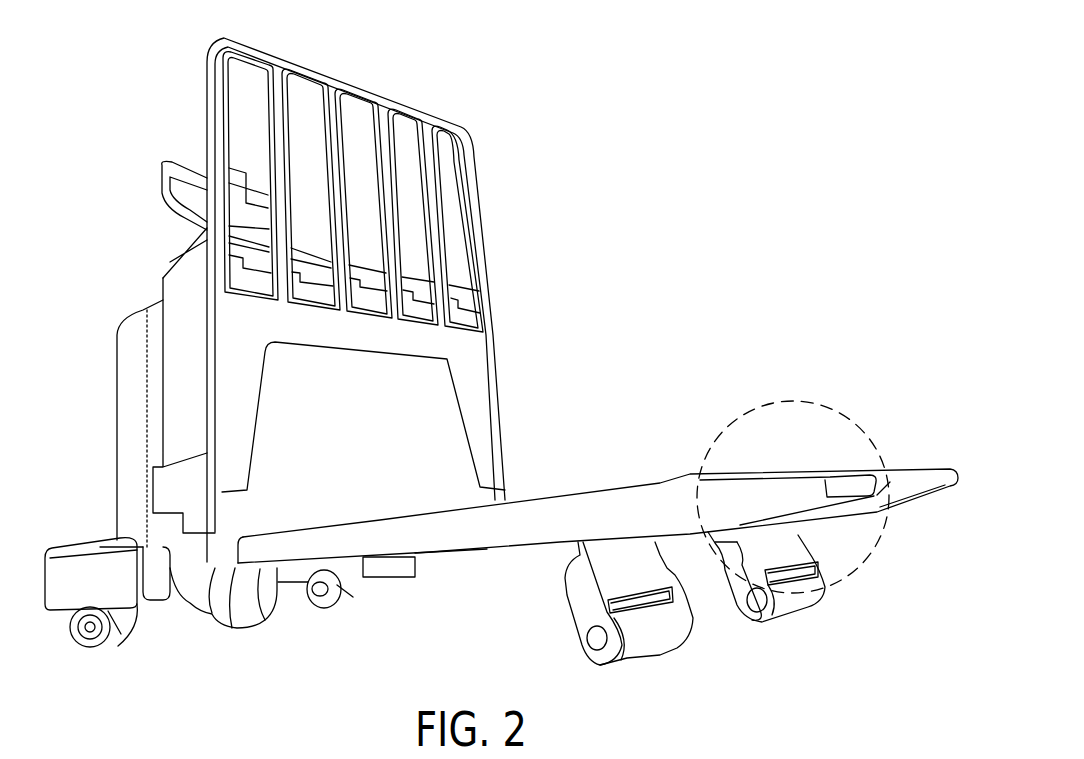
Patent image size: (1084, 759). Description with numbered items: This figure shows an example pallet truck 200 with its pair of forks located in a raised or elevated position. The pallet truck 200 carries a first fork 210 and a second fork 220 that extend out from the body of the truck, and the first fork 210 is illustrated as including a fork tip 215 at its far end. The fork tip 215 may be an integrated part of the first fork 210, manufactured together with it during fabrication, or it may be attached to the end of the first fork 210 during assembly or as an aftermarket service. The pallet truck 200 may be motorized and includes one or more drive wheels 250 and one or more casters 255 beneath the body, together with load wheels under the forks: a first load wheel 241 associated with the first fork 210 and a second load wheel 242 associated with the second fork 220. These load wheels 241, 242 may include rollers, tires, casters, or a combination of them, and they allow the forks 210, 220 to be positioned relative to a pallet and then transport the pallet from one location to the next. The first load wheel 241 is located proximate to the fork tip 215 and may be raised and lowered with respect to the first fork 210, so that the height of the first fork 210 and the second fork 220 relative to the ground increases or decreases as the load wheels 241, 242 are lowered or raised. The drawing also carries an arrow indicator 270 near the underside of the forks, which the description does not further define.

The pallet truck 200 is at (501, 370).
The first fork 210 is at (640, 483).
The fork tip 215 is at (763, 406).
The second fork 220 is at (927, 470).
The first load wheel 241 is at (660, 653).
The second load wheel 242 is at (825, 600).
The drive wheel 250 is at (240, 627).
The caster 255 is at (322, 610).
The underside / direction indicator 270 is at (503, 589).